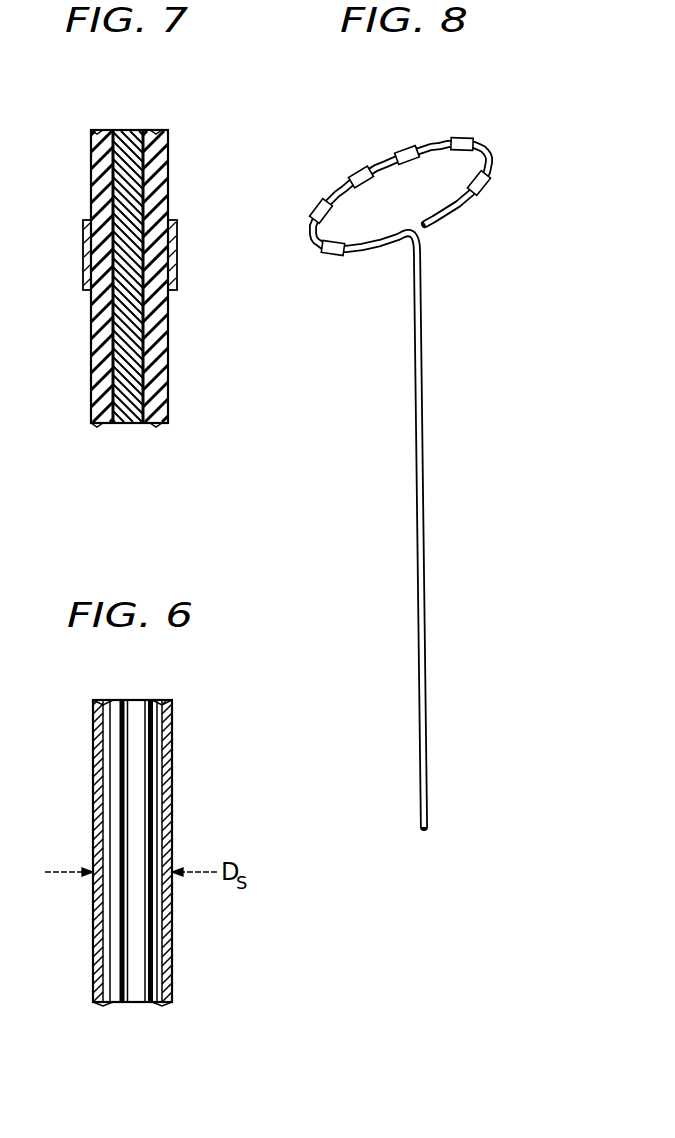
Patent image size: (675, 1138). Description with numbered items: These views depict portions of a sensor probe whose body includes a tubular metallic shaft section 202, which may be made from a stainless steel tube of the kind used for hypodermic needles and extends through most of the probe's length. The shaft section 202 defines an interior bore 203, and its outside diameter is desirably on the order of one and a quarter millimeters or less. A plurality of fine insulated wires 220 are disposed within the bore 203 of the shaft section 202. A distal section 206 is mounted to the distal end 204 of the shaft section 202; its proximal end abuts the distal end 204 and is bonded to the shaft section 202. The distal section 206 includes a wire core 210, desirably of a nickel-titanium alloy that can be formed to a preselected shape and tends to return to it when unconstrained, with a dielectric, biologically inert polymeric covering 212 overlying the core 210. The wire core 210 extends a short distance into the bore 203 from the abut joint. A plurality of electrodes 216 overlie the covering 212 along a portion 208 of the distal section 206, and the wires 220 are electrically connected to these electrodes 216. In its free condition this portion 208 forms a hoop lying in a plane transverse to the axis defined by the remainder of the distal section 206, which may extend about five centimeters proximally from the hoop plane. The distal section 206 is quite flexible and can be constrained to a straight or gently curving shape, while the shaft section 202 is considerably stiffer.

In FIG. 6, the tubular metallic shaft section 202 is at (172, 782).
In FIG. 8, the tubular metallic shaft section 202 is at (424, 530).
In FIG. 6, the interior bore 203 is at (157, 732).
In FIG. 8, the distal end of shaft section 204 is at (415, 485).
In FIG. 7, the distal section 206 is at (131, 257).
In FIG. 8, the distal section 206 is at (433, 454).
In FIG. 8, the hoop portion of distal section 208 is at (474, 119).
In FIG. 7, the wire core 210 is at (127, 140).
In FIG. 7, the polymeric covering 212 is at (168, 360).
In FIG. 7, the electrodes 216 is at (177, 249).
In FIG. 8, the electrodes 216 is at (403, 152).
In FIG. 6, the fine insulated wires 220 is at (118, 798).